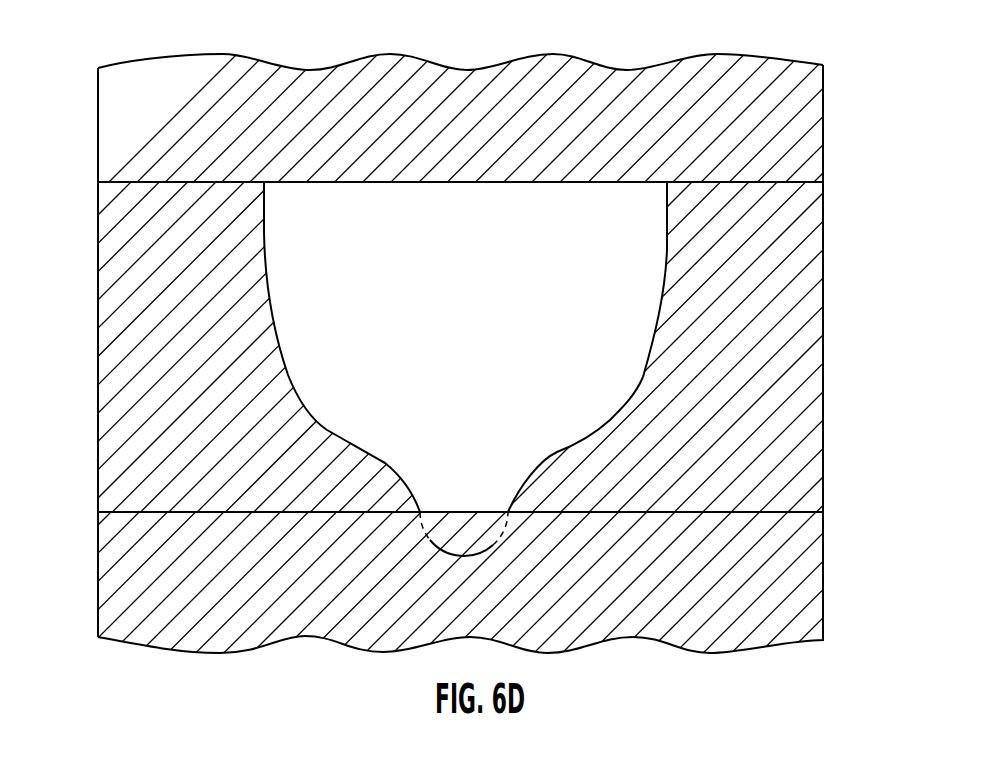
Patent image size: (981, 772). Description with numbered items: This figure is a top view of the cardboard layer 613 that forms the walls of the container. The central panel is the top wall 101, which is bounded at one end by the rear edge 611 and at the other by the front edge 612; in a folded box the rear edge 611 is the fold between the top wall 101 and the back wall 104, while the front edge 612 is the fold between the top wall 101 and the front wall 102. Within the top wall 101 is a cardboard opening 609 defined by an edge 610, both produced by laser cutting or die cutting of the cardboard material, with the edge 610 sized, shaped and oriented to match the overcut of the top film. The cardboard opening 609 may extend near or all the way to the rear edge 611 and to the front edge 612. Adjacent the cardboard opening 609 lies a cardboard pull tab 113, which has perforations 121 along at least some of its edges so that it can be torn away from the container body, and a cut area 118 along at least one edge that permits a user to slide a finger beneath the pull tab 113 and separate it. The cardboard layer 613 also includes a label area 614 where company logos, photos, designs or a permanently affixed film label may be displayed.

The cardboard layer 613 is at (674, 50).
The back wall 104 is at (815, 107).
The rear edge 611 is at (118, 152).
The top wall 101 is at (813, 220).
The label area 614 is at (118, 411).
The front wall 102 is at (760, 637).
The front edge 612 is at (110, 552).
The cardboard opening 609 is at (623, 337).
The edge 610 is at (619, 410).
The cardboard pull tab 113 is at (508, 511).
The perforations 121 is at (500, 525).
The cut area 118 is at (464, 556).